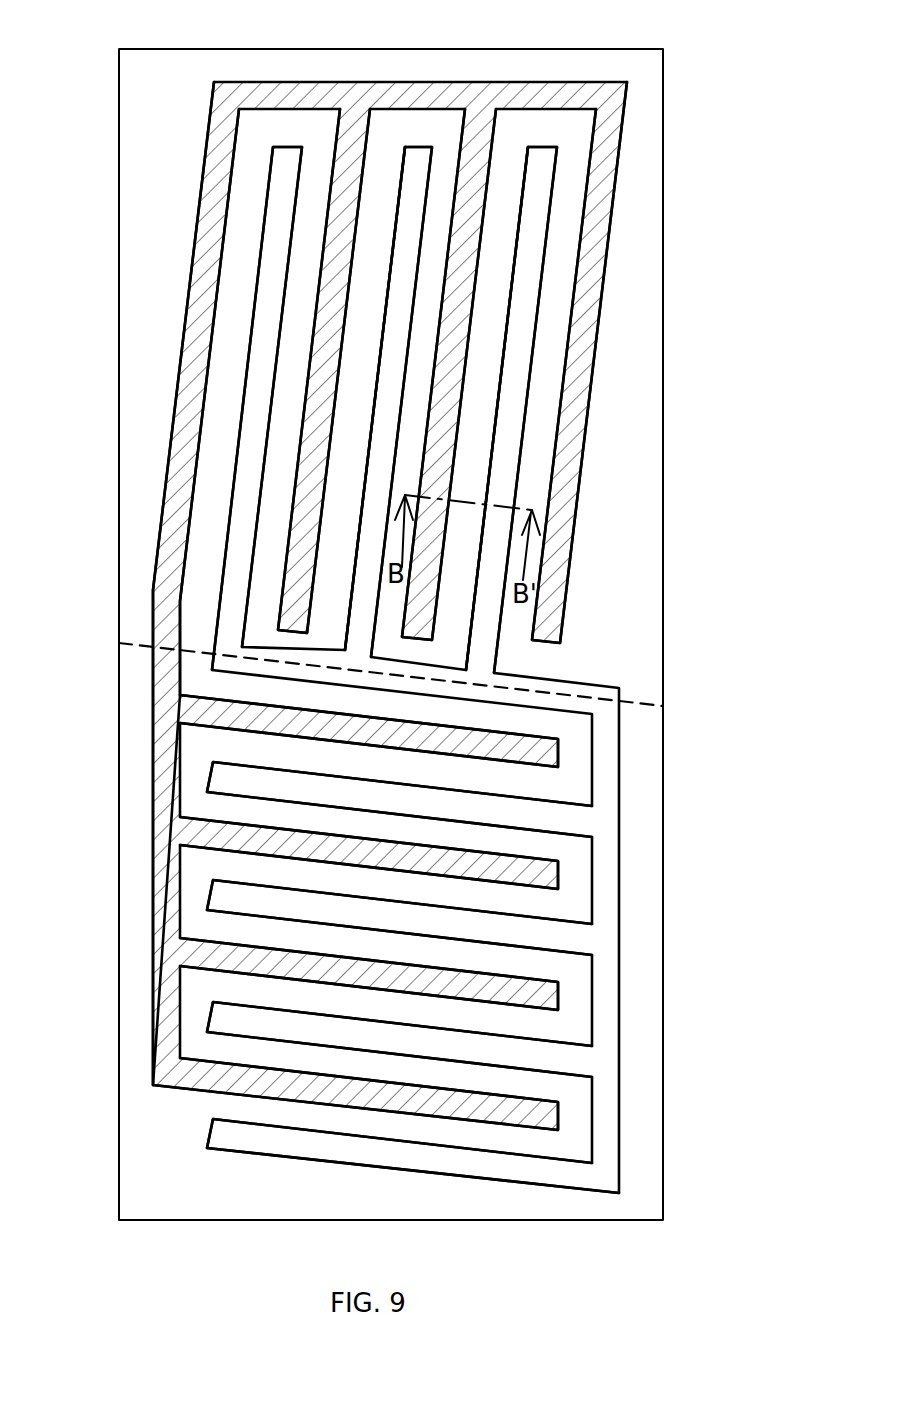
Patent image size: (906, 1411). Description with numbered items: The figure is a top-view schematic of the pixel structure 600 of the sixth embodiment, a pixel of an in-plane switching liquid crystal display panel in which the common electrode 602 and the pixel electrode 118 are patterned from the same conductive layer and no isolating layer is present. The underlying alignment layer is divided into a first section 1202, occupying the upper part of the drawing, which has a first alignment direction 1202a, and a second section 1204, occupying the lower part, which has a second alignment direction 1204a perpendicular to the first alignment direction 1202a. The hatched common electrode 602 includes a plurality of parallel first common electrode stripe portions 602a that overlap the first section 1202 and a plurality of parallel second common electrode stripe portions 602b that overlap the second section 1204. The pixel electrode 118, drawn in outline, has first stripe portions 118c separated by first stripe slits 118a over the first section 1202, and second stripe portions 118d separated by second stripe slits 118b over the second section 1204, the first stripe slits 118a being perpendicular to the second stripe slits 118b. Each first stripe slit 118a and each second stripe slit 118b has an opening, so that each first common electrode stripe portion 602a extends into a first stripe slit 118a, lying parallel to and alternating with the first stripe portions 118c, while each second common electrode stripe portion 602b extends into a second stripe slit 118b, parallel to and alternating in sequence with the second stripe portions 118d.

The pixel structure 600 is at (676, 95).
The common electrode 602 is at (622, 168).
The first common electrode stripe portions 602a is at (600, 237).
The second common electrode stripe portions 602b is at (548, 752).
The pixel electrode 118 is at (600, 823).
The first stripe slits 118a is at (385, 168).
The second stripe slits 118b is at (223, 748).
The first stripe portions 118c is at (287, 168).
The second stripe portions 118d is at (225, 786).
The first section 1202 is at (640, 588).
The first alignment direction 1202a is at (641, 305).
The second section 1204 is at (630, 952).
The second alignment direction 1204a is at (270, 1201).